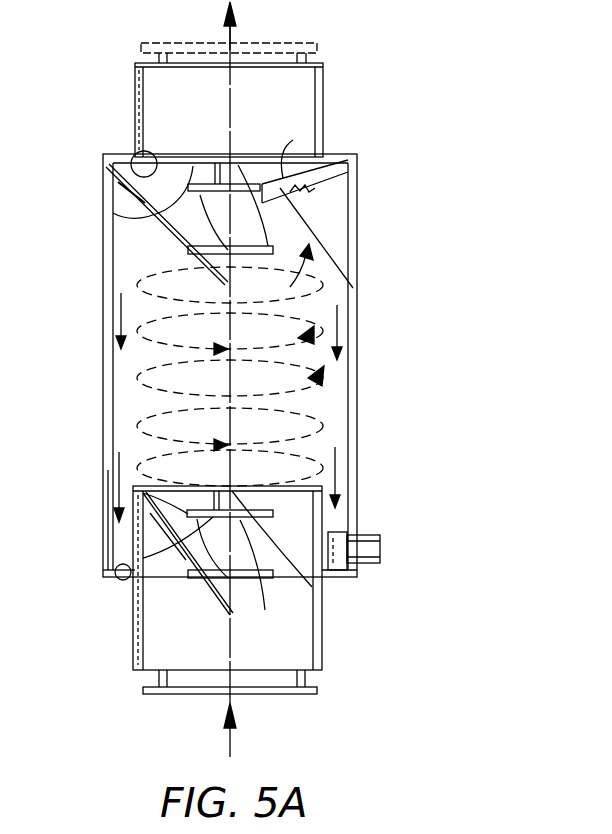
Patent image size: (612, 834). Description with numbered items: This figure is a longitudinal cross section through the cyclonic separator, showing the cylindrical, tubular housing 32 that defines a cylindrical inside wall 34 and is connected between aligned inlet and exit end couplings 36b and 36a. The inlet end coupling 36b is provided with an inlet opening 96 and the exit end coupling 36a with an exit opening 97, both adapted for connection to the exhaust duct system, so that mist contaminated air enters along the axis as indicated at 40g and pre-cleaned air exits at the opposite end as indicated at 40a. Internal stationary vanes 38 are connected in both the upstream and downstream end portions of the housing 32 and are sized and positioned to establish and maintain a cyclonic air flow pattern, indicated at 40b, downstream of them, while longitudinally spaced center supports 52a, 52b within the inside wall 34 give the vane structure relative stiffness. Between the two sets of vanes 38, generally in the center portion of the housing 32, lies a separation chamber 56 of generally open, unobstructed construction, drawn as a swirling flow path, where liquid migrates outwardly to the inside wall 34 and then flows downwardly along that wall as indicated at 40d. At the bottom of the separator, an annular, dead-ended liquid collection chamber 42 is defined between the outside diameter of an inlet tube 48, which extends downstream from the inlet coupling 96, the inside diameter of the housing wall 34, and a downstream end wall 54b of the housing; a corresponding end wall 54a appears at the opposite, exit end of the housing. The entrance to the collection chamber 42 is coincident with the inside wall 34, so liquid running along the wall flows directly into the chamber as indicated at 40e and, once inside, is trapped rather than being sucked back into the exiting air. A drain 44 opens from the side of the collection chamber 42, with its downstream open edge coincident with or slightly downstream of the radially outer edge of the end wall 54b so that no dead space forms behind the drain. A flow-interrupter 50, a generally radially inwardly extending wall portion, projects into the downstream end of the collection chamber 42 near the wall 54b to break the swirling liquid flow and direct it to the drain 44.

The housing 32 is at (102, 310).
The inside wall 34 is at (349, 213).
The exit end coupling 36a is at (135, 88).
The inlet end coupling 36b is at (132, 650).
The internal stationary vanes 38 is at (128, 200).
The exit air flow 40a is at (238, 36).
The cyclonic air flow pattern 40b is at (313, 267).
The downward liquid flow along inside wall 40d is at (102, 458).
The liquid flow into collection chamber 40e is at (100, 512).
The inlet air flow 40g is at (228, 735).
The liquid collection chamber 42 is at (112, 540).
The drain 44 is at (375, 566).
The inlet tube 48 is at (324, 98).
The flow-interrupter 50 is at (340, 573).
The center support 52a is at (103, 214).
The center support 52b is at (188, 246).
The upper fitting 54a is at (138, 152).
The downstream end wall 54b is at (130, 577).
The separation chamber 56 is at (335, 380).
The inlet opening 96 is at (285, 695).
The exit opening 97 is at (272, 44).